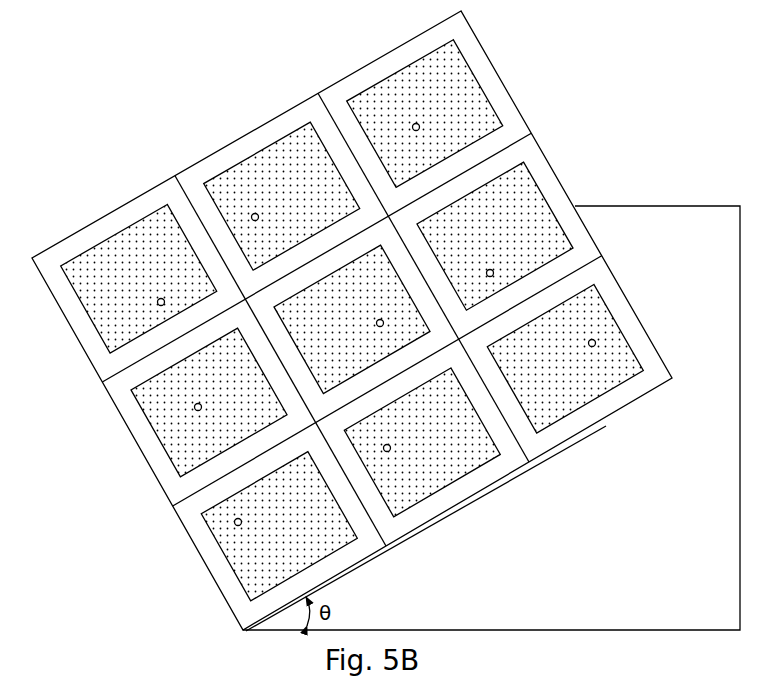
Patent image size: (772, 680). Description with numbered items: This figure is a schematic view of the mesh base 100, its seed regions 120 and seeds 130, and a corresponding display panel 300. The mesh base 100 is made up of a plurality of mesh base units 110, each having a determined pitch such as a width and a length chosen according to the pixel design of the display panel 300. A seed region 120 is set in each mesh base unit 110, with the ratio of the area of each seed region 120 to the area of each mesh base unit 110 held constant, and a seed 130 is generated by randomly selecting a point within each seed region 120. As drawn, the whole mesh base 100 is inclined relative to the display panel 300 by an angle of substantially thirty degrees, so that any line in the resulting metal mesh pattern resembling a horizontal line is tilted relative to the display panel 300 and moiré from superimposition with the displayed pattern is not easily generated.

The mesh base 100 is at (342, 321).
The mesh base unit 110 is at (97, 221).
The seed region 120 is at (92, 329).
The seed 130 is at (158, 305).
The display panel 300 is at (642, 205).